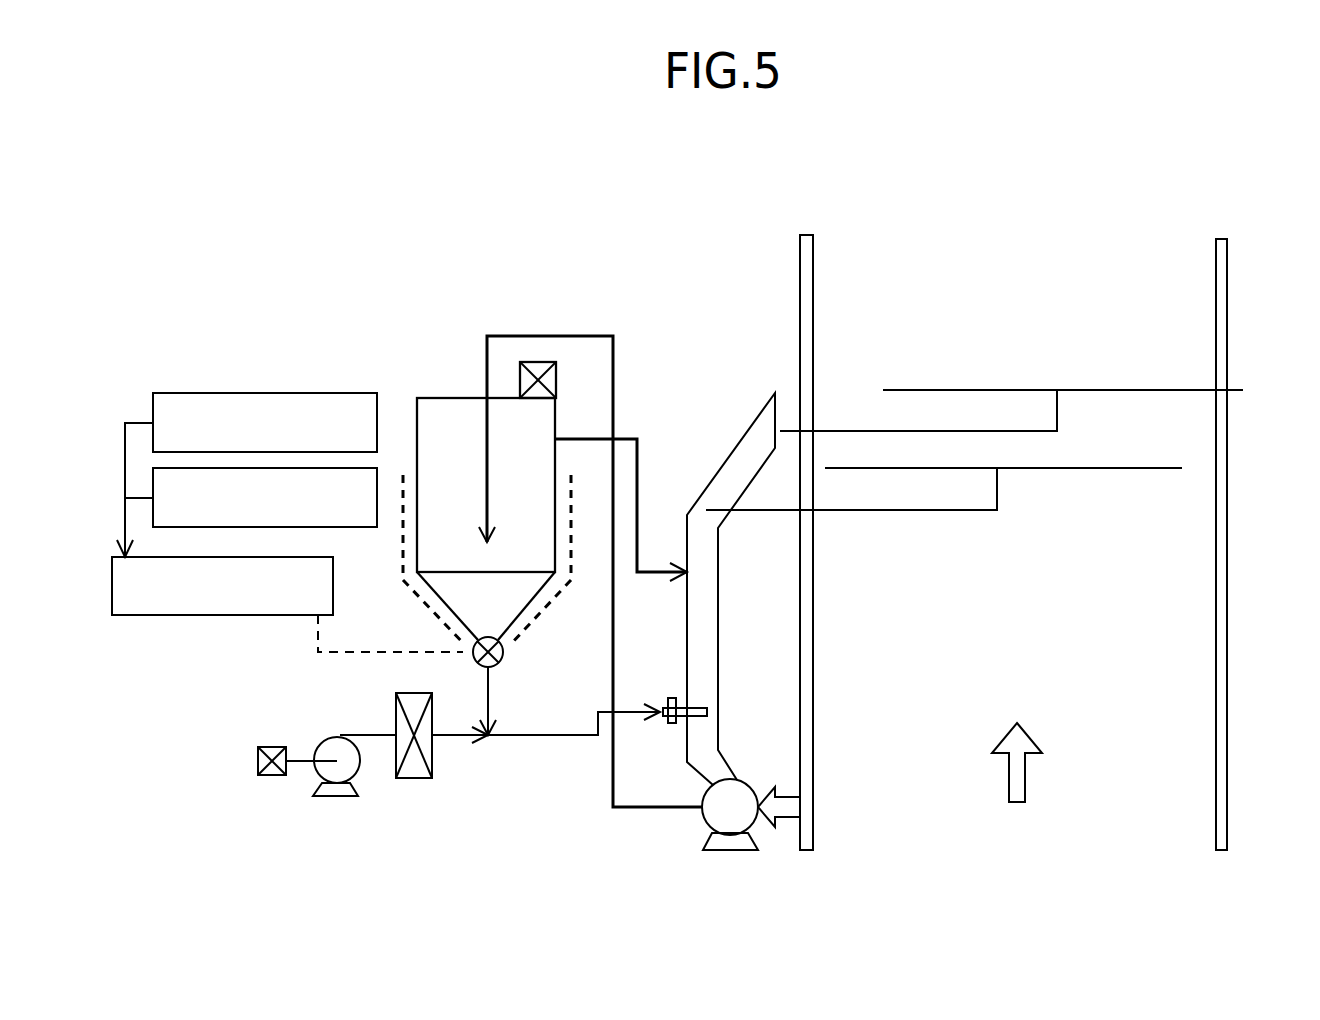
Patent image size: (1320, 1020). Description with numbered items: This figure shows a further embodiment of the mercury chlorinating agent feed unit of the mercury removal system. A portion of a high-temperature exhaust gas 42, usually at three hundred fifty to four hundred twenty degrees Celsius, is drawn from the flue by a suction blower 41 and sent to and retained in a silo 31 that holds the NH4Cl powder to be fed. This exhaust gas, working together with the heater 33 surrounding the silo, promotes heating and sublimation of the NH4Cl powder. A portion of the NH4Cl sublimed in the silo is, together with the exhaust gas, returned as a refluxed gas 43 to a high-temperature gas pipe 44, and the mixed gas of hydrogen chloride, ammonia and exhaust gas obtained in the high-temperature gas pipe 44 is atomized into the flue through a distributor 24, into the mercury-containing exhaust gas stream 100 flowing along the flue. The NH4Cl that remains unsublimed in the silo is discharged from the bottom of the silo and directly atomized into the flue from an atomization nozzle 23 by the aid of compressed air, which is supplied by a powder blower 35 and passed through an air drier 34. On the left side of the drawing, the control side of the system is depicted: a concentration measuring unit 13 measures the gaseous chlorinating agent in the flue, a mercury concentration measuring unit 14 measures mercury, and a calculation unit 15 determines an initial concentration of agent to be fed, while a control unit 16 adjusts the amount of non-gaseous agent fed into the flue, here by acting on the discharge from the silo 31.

The concentration measuring unit 13 is at (246, 393).
The mercury concentration measuring unit 14 is at (272, 468).
The calculation unit 15 is at (214, 632).
The control unit 16 is at (143, 615).
The atomization nozzle 23 is at (675, 725).
The distributor 24 is at (1185, 392).
The silo 31 is at (440, 395).
The heater 33 is at (403, 475).
The air drier 34 is at (432, 765).
The powder blower 35 is at (350, 767).
The suction blower 41 is at (748, 818).
The high-temperature exhaust gas 42 is at (527, 336).
The refluxed gas 43 is at (628, 435).
The high-temperature gas pipe 44 is at (710, 640).
The mercury-containing exhaust gas stream 100 is at (1025, 780).